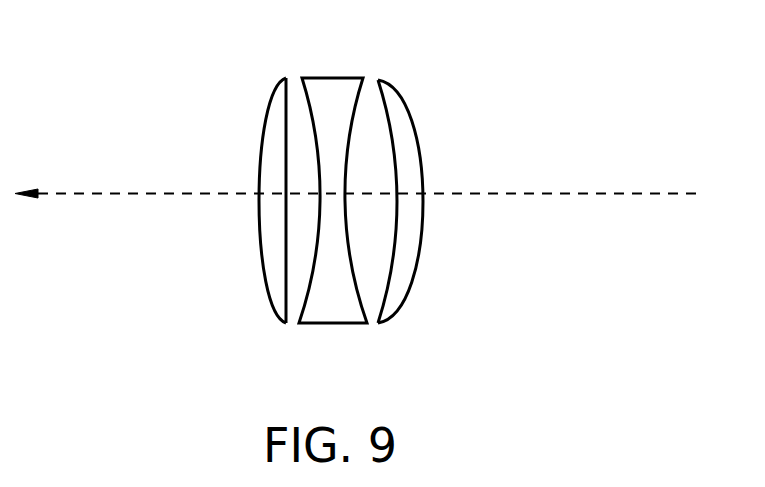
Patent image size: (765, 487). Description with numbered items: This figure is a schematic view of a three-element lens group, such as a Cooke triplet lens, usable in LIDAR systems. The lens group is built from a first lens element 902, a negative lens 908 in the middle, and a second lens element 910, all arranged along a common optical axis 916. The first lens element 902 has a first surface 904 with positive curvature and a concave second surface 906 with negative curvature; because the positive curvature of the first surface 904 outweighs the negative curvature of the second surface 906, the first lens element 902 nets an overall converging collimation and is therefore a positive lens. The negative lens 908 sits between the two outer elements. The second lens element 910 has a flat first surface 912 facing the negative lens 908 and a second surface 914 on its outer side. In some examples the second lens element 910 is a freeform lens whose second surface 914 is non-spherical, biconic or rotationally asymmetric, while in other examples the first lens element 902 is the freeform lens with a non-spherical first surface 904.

The first lens element 902 is at (435, 217).
The first surface 904 is at (392, 84).
The concave second surface 906 is at (395, 152).
The negative lens 908 is at (355, 317).
The second lens element 910 is at (239, 195).
The flat first surface 912 is at (287, 100).
The second surface 914 is at (270, 100).
The optical axis 916 is at (26, 190).